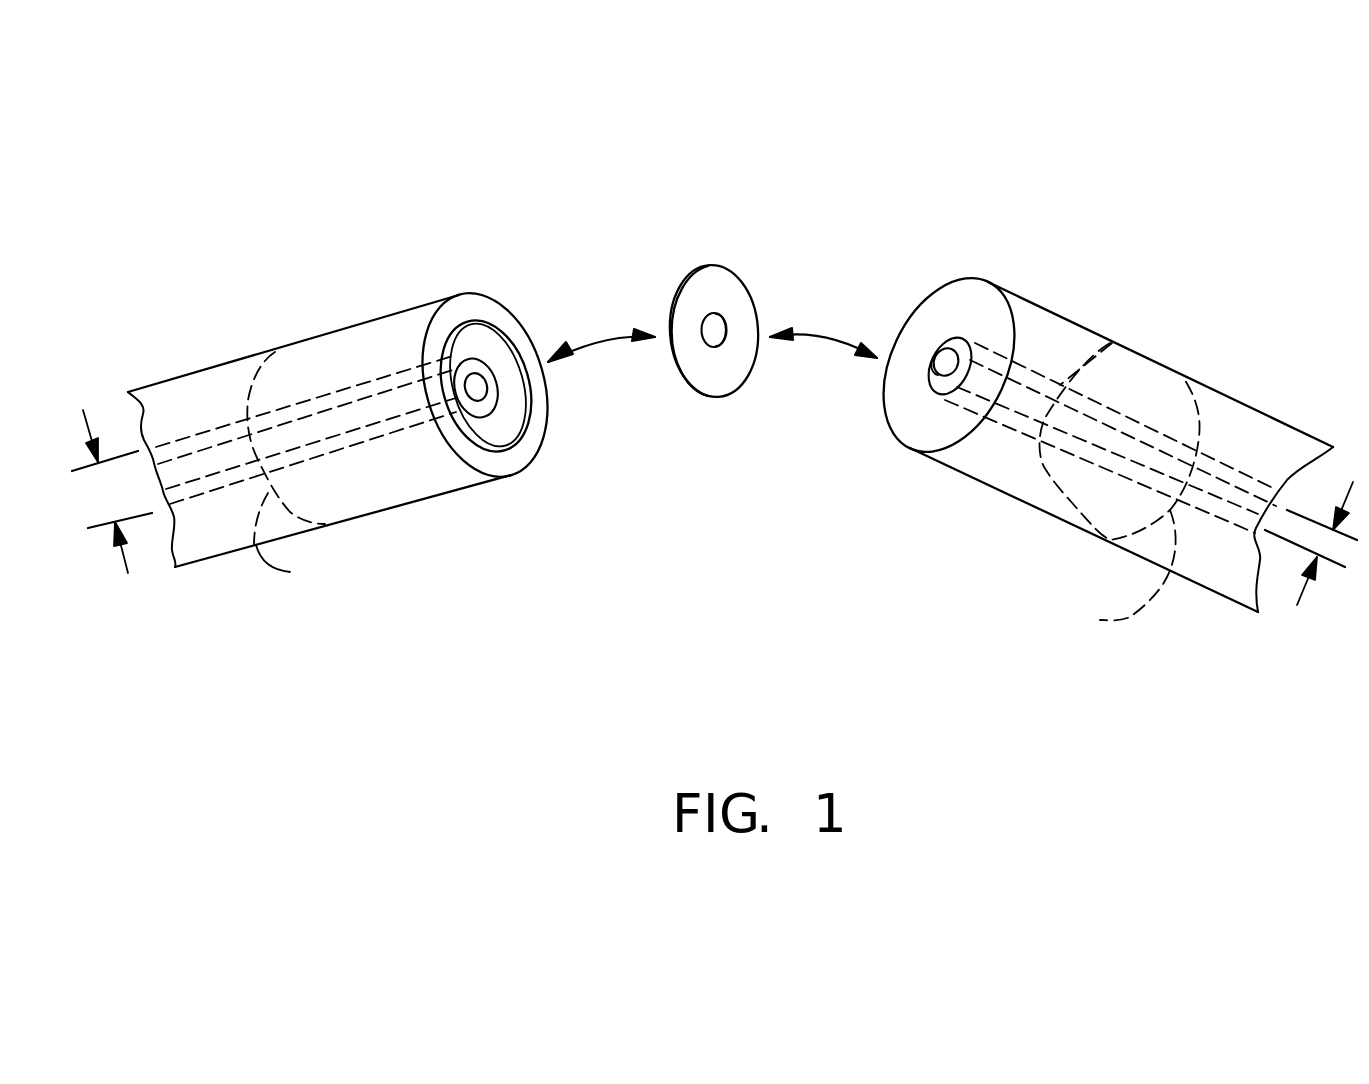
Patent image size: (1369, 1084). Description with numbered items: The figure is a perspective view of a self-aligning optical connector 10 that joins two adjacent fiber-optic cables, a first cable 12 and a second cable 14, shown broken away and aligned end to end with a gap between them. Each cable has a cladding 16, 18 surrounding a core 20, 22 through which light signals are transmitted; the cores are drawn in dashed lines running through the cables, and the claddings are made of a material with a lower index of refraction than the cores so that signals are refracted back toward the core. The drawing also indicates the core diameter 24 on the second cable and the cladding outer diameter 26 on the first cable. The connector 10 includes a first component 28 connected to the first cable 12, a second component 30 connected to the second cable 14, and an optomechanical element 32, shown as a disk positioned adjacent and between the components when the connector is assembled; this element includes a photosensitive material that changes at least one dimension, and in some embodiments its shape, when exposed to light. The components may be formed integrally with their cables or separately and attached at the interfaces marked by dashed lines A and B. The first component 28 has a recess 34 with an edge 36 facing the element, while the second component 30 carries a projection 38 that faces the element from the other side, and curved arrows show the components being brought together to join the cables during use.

The self-aligning optical connector 10 is at (1020, 163).
The first cable 12 is at (242, 422).
The second cable 14 is at (1235, 397).
The cladding 16 is at (207, 363).
The cladding 18 is at (1058, 385).
The core 20 is at (374, 385).
The core 22 is at (1063, 490).
The core diameter 24 is at (1298, 606).
The cladding outer diameter 26 is at (125, 567).
The first component 28 is at (318, 330).
The second component 30 is at (1052, 310).
The optomechanical element 32 is at (710, 263).
The recess 34 is at (489, 337).
The edge 36 is at (527, 423).
The projection 38 is at (948, 350).